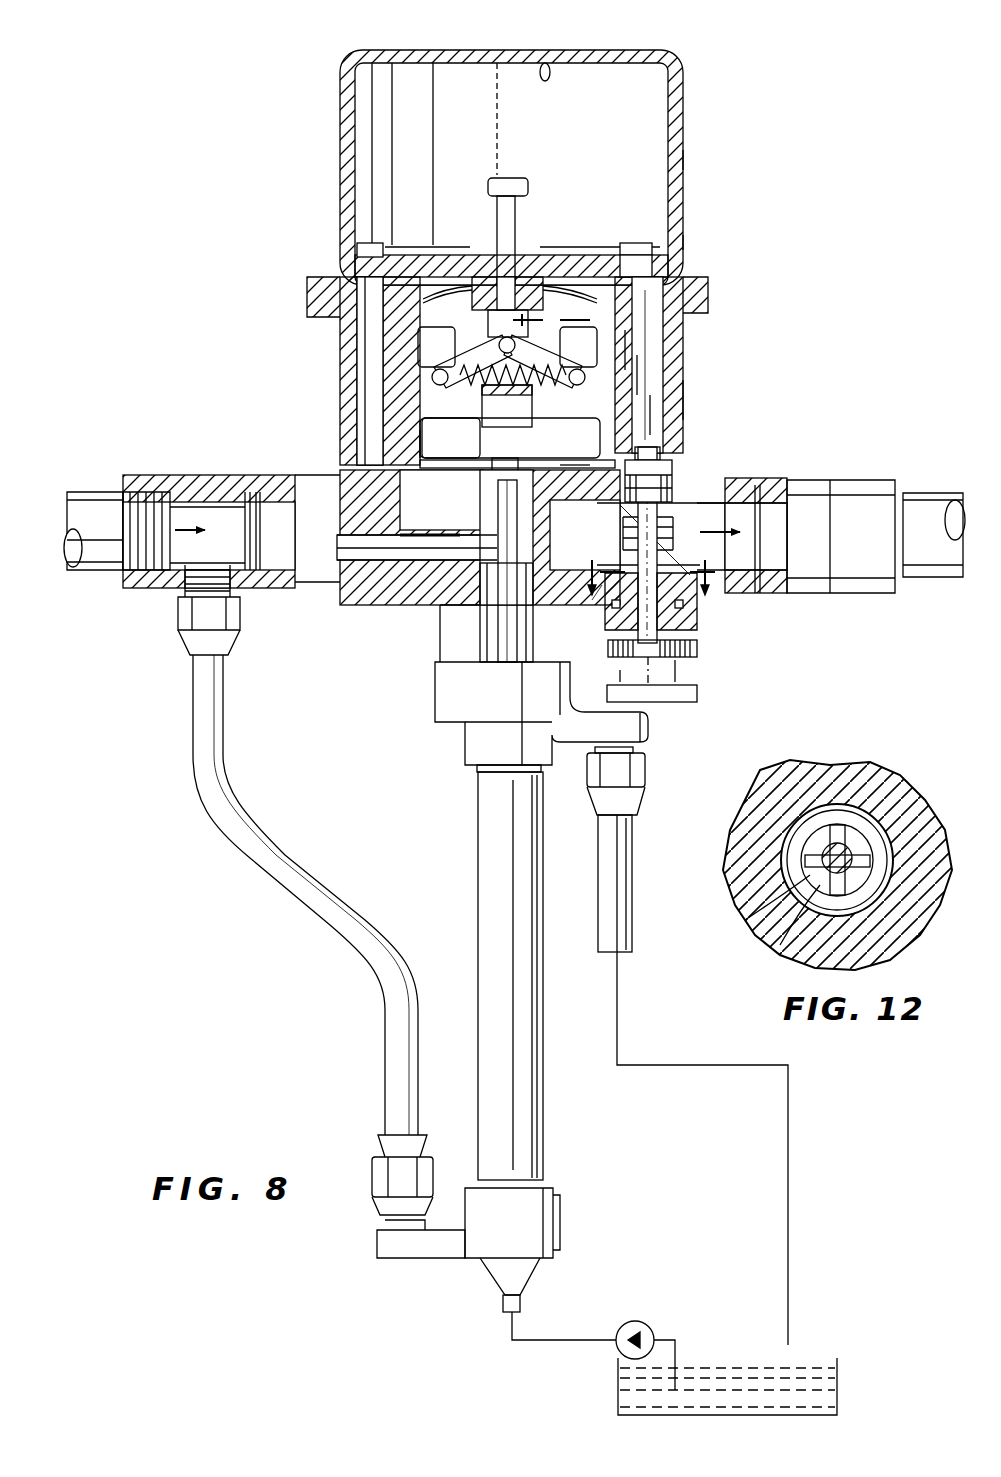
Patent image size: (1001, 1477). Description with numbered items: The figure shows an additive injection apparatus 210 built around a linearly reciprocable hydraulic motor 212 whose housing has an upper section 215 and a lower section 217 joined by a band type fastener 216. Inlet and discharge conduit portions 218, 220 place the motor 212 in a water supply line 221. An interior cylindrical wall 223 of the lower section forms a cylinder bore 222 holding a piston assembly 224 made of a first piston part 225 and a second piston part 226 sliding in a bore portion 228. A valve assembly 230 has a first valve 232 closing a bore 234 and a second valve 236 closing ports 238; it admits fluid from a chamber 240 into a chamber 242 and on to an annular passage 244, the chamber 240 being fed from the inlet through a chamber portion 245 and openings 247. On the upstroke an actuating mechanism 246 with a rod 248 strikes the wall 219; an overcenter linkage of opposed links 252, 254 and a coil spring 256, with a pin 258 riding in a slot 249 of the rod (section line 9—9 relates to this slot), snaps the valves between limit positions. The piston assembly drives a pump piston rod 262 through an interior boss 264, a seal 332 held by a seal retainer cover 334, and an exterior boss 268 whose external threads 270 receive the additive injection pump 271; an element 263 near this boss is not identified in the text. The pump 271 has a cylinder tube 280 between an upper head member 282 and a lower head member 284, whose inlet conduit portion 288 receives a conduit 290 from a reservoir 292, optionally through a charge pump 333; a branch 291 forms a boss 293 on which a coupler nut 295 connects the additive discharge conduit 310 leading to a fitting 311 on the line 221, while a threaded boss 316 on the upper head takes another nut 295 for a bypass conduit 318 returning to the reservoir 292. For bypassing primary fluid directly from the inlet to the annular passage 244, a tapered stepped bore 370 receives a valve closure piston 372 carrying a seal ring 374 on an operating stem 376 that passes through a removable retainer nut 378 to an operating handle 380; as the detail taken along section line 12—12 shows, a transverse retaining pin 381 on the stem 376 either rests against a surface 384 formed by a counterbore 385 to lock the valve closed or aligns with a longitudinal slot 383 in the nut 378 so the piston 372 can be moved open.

In FIG. 8, the additive injection apparatus 210 is at (712, 162).
In FIG. 8, the hydraulic motor 212 is at (700, 242).
In FIG. 8, the upper housing section 215 is at (683, 104).
In FIG. 8, the band type fastener 216 is at (714, 312).
In FIG. 8, the lower housing section 217 is at (686, 388).
In FIG. 12, the lower housing section 217 is at (928, 917).
In FIG. 8, the inlet conduit portion 218 is at (722, 585).
In FIG. 8, the wall of upper housing section 219 is at (545, 63).
In FIG. 8, the discharge conduit portion 220 is at (335, 600).
In FIG. 8, the fluid conduit 221 is at (120, 625).
In FIG. 8, the cylinder bore 222 is at (660, 405).
In FIG. 8, the interior cylindrical wall 223 is at (640, 372).
In FIG. 8, the piston assembly 224 is at (360, 380).
In FIG. 8, the first piston part 225 is at (420, 440).
In FIG. 8, the second piston part 226 is at (410, 268).
In FIG. 8, the bore portion 228 is at (370, 170).
In FIG. 8, the valve assembly 230 is at (433, 243).
In FIG. 8, the first valve 232 is at (530, 262).
In FIG. 8, the bore 234 is at (519, 236).
In FIG. 8, the second valve 236 is at (636, 250).
In FIG. 8, the ports 238 is at (348, 270).
In FIG. 8, the chamber 240 is at (510, 438).
In FIG. 8, the chamber 242 is at (564, 136).
In FIG. 8, the annular passage 244 is at (668, 334).
In FIG. 8, the chamber portion 245 is at (444, 488).
In FIG. 8, the actuating mechanism 246 is at (400, 357).
In FIG. 8, the openings 247 is at (425, 468).
In FIG. 8, the rod 248 is at (530, 190).
In FIG. 8, the slot 249 is at (505, 410).
In FIG. 8, the link 252 is at (440, 410).
In FIG. 8, the link 254 is at (630, 345).
In FIG. 8, the coil spring 256 is at (575, 465).
In FIG. 8, the pin 258 is at (430, 345).
In FIG. 8, the pump piston rod 262 is at (595, 630).
In FIG. 8, the bore 263 is at (460, 620).
In FIG. 8, the interior boss 264 is at (620, 548).
In FIG. 8, the exterior boss 268 is at (445, 655).
In FIG. 8, the external threads 270 is at (609, 673).
In FIG. 8, the additive injection pump 271 is at (472, 865).
In FIG. 8, the cylinder tube 280 is at (532, 977).
In FIG. 8, the upper head member 282 is at (448, 748).
In FIG. 8, the lower head member 284 is at (568, 1212).
In FIG. 8, the inlet conduit portion 288 is at (500, 1303).
In FIG. 8, the conduit 290 is at (558, 1340).
In FIG. 8, the branch 291 is at (410, 1258).
In FIG. 8, the reservoir 292 is at (618, 1378).
In FIG. 8, the boss 293 is at (375, 1236).
In FIG. 8, the coupler nut 295 is at (638, 808).
In FIG. 8, the additive discharge conduit 310 is at (320, 925).
In FIG. 8, the fitting 311 is at (220, 478).
In FIG. 8, the threaded boss 316 is at (641, 726).
In FIG. 8, the bypass conduit 318 is at (648, 892).
In FIG. 8, the seal 332 is at (448, 600).
In FIG. 8, the charge pump 333 is at (650, 1330).
In FIG. 8, the seal retainer cover 334 is at (398, 543).
In FIG. 8, the tapered stepped bore 370 is at (672, 464).
In FIG. 8, the valve closure piston 372 is at (693, 545).
In FIG. 8, the seal ring 374 is at (715, 478).
In FIG. 8, the operating stem 376 is at (605, 522).
In FIG. 12, the operating stem 376 is at (780, 945).
In FIG. 8, the retainer nut 378 is at (690, 670).
In FIG. 12, the retainer nut 378 is at (745, 920).
In FIG. 8, the operating handle 380 is at (700, 648).
In FIG. 12, the retaining pin 381 is at (860, 835).
In FIG. 8, the slot 383 is at (579, 590).
In FIG. 12, the slot 383 is at (832, 825).
In FIG. 12, the surface 384 is at (891, 952).
In FIG. 12, the counterbore 385 is at (810, 835).
In FIG. 8, the section line 9— 9 is at (551, 321).
In FIG. 8, the section line 12— 12 is at (651, 572).